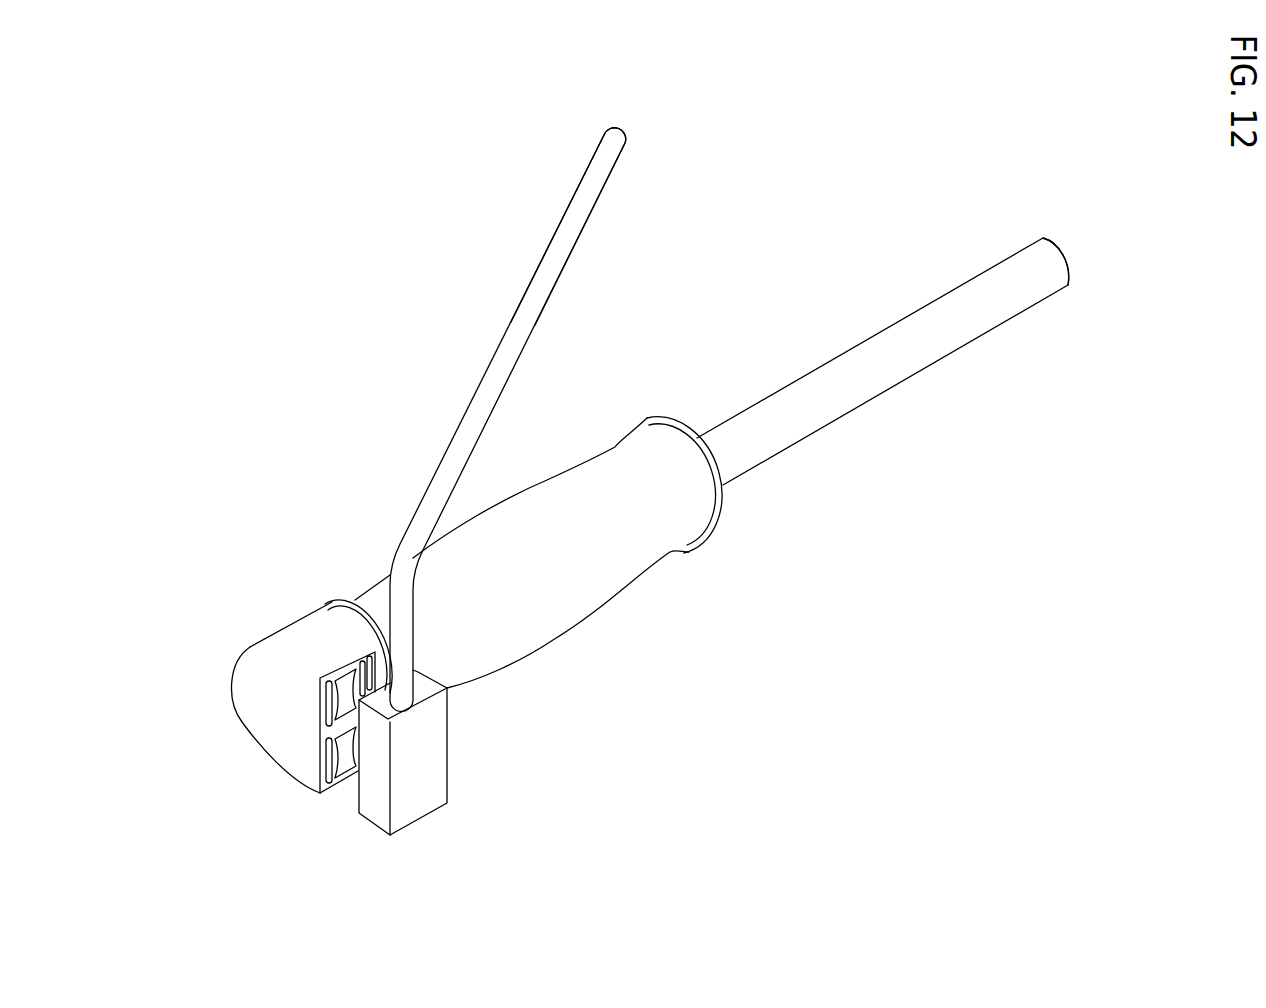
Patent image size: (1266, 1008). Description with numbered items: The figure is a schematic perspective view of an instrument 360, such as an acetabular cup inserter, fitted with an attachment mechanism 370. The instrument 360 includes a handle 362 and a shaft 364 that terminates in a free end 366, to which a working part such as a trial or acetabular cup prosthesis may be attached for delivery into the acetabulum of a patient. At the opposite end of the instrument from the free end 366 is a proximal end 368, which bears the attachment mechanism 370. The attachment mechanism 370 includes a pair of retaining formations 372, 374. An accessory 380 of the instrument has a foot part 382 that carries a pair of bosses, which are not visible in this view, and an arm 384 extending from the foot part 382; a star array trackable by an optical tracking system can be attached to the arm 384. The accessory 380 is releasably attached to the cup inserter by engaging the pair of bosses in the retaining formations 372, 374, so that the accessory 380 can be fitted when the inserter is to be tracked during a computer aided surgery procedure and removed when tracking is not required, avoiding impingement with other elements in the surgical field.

The instrument 360 is at (638, 520).
The handle 362 is at (553, 643).
The shaft 364 is at (850, 412).
The free end 366 is at (1067, 237).
The proximal end 368 is at (358, 574).
The attachment mechanism 370 is at (335, 808).
The retaining formation 372 is at (319, 712).
The retaining formation 374 is at (319, 741).
The accessory 380 is at (598, 238).
The foot part 382 is at (448, 742).
The arm 384 is at (508, 322).